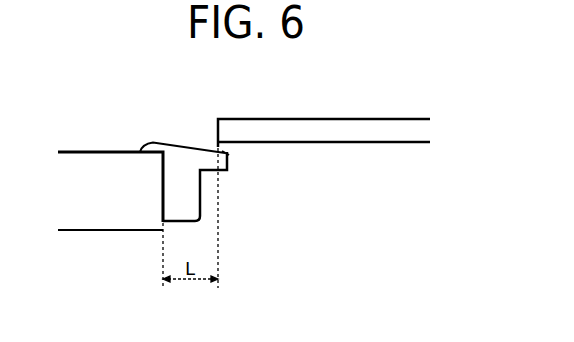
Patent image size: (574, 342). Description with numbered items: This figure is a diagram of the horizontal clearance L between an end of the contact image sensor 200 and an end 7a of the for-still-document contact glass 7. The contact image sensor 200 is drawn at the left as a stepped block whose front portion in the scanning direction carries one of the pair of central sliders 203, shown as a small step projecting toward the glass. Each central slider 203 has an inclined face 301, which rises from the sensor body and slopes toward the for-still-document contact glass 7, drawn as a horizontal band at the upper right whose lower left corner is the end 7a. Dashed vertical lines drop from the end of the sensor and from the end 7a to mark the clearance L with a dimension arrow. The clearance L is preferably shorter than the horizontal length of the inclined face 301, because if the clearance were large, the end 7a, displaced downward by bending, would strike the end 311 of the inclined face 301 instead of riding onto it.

The contact image sensor 200 is at (103, 198).
The central slider 203 is at (187, 190).
The for-still-document contact glass 7 is at (296, 130).
The end of the for-still-document contact glass 7a is at (219, 147).
The inclined face 301 is at (173, 138).
The end of the inclined face 311 is at (223, 152).